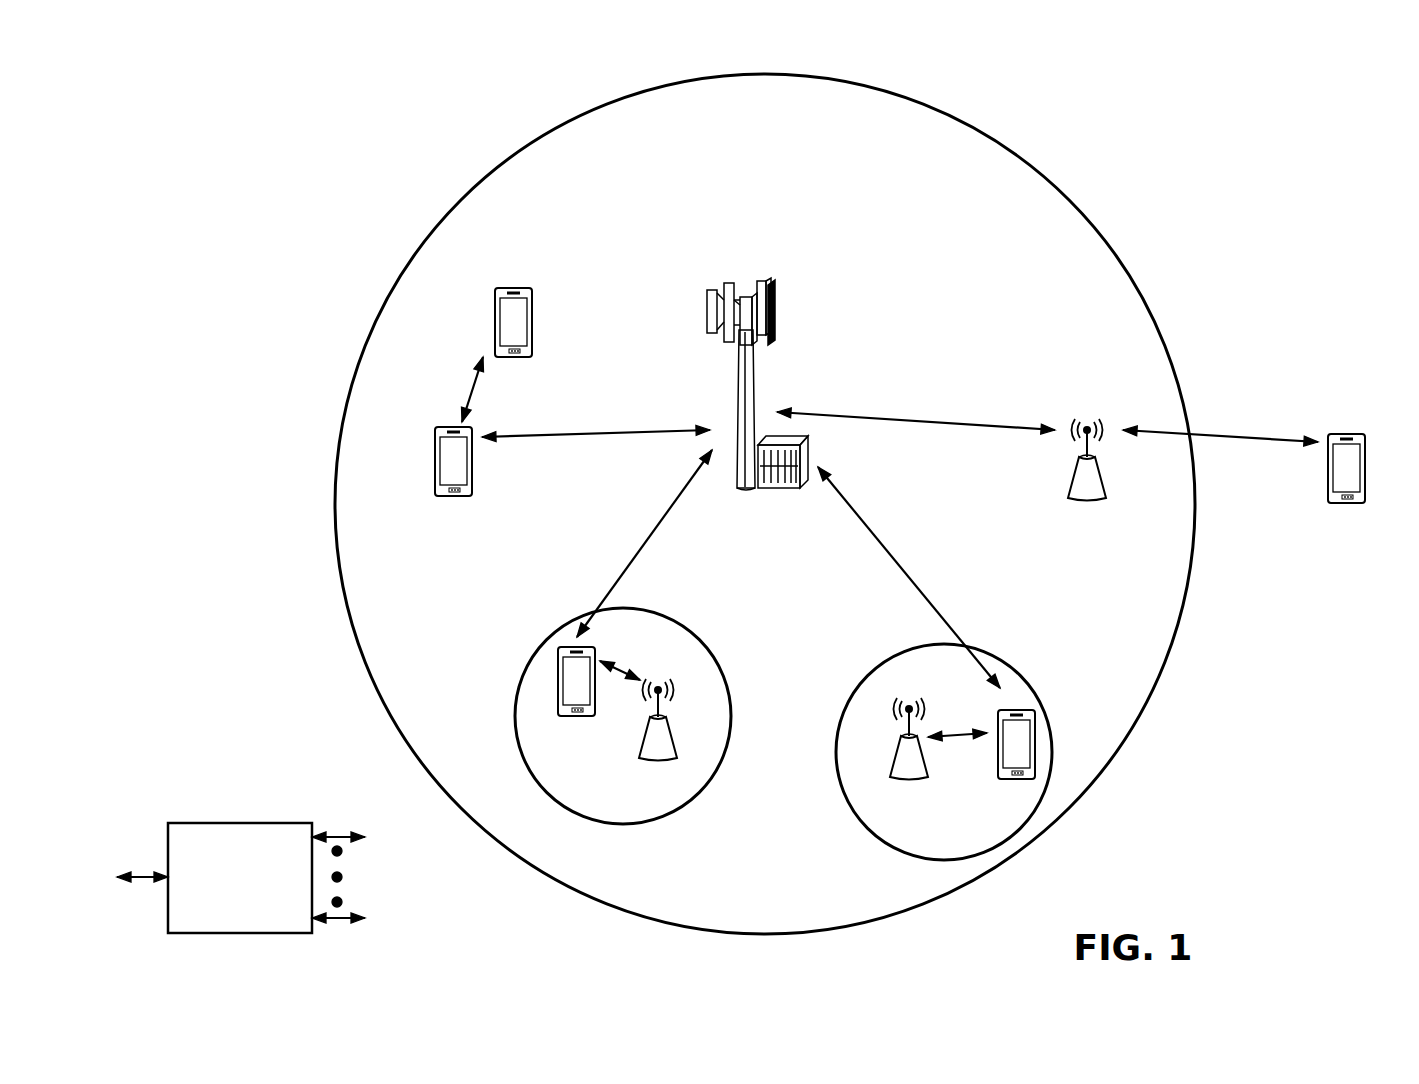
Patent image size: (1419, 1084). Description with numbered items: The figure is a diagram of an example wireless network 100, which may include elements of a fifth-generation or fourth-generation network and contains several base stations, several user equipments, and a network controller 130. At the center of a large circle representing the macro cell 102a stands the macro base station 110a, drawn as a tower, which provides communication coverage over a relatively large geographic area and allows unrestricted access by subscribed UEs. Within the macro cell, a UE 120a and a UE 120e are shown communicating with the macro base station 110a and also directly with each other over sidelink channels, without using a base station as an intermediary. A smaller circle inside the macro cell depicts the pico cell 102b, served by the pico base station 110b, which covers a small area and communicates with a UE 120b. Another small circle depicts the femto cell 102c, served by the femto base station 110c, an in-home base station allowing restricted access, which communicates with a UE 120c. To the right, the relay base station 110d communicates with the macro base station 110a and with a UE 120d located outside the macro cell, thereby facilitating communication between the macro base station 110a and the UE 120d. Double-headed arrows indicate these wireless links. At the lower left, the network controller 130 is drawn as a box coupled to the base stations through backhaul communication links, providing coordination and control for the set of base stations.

The wireless network 100 is at (222, 66).
The macro cell 102a is at (1047, 178).
The pico cell 102b is at (712, 657).
The femto cell 102c is at (878, 660).
The macro base station 110a is at (750, 277).
The pico base station 110b is at (674, 750).
The femto base station 110c is at (892, 770).
The relay base station 110d is at (1086, 420).
The user equipment 120a is at (435, 470).
The user equipment 120b is at (560, 716).
The user equipment 120c is at (997, 778).
The user equipment 120d is at (1358, 432).
The user equipment 120e is at (495, 318).
The network controller 130 is at (238, 823).